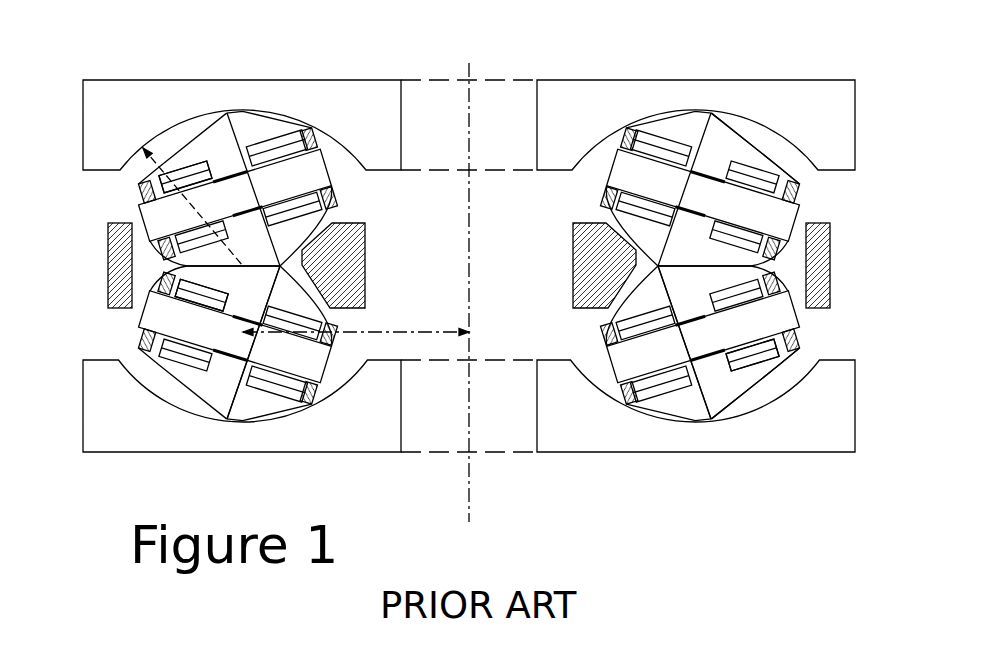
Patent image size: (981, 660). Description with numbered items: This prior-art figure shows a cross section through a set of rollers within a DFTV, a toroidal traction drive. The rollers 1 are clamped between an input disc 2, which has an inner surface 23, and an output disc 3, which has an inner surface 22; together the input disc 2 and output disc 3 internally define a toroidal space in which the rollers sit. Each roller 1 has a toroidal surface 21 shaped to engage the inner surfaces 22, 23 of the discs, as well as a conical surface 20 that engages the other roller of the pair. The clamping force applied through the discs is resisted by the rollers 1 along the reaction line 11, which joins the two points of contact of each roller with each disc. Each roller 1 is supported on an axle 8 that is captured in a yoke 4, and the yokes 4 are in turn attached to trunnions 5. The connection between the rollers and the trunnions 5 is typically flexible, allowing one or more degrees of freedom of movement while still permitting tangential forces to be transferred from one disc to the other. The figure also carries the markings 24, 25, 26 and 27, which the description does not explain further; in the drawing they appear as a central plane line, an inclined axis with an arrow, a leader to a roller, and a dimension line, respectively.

The roller 1 is at (258, 132).
The input disc 2 is at (562, 108).
The output disc 3 is at (578, 423).
The yoke 4 is at (140, 192).
The trunnion 5 is at (590, 258).
The axle 8 is at (645, 175).
The reaction line 11 is at (250, 360).
The conical surface 20 is at (752, 393).
The toroidal surface 21 is at (682, 422).
The inner surface 22 is at (782, 397).
The inner surface 23 is at (765, 125).
The center plane 24 is at (477, 58).
The pivot axis 25 is at (158, 165).
The tapered roller bearing 26 is at (240, 272).
The distance 27 is at (382, 340).